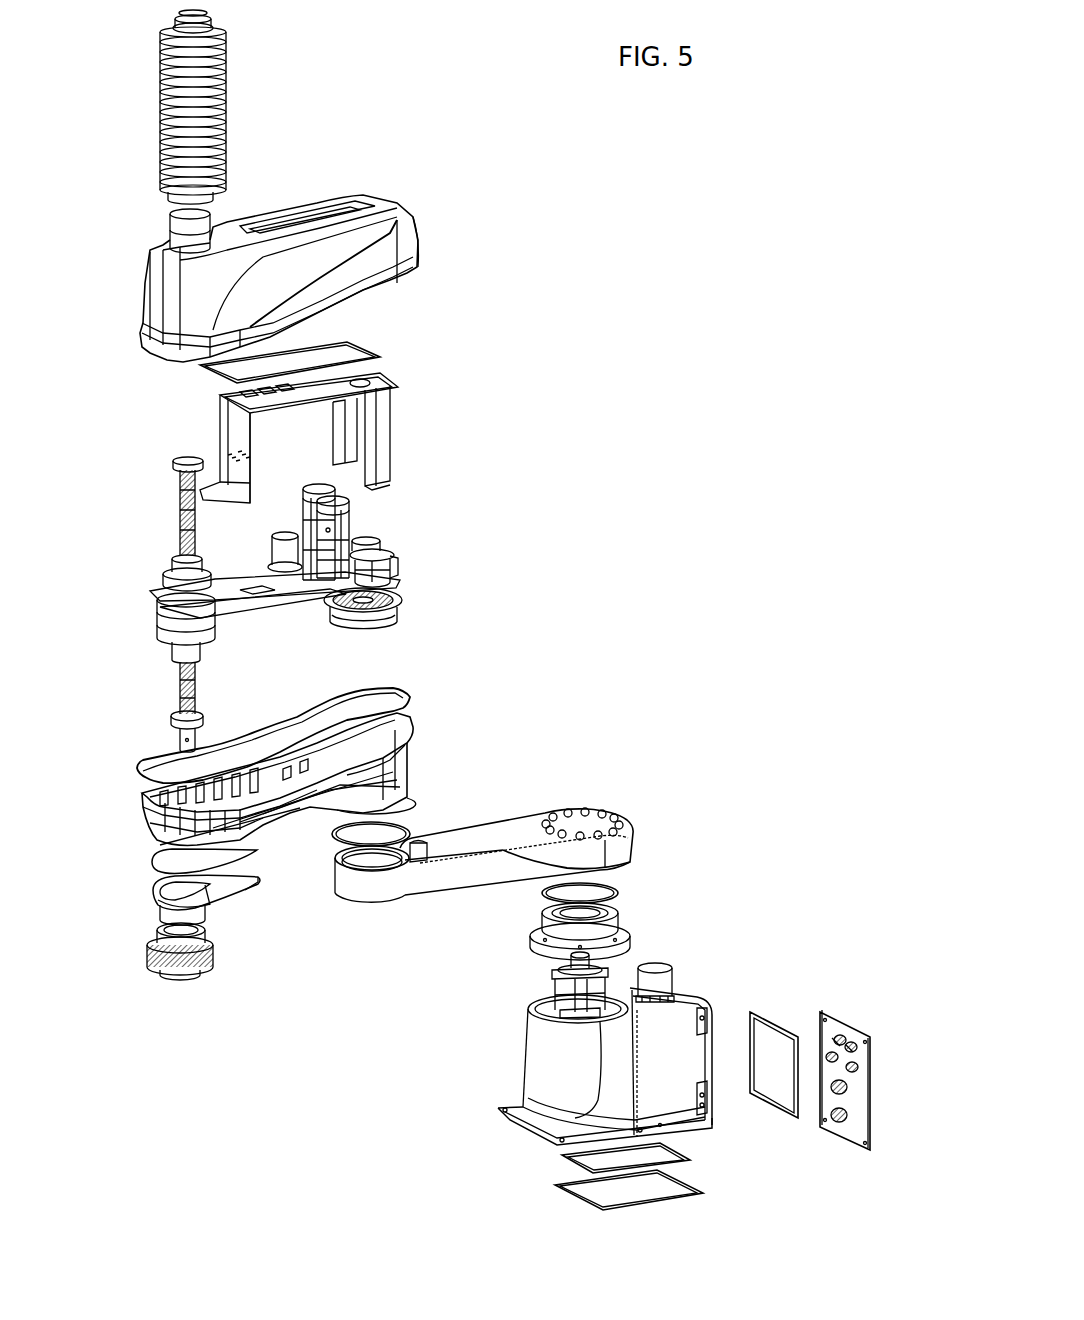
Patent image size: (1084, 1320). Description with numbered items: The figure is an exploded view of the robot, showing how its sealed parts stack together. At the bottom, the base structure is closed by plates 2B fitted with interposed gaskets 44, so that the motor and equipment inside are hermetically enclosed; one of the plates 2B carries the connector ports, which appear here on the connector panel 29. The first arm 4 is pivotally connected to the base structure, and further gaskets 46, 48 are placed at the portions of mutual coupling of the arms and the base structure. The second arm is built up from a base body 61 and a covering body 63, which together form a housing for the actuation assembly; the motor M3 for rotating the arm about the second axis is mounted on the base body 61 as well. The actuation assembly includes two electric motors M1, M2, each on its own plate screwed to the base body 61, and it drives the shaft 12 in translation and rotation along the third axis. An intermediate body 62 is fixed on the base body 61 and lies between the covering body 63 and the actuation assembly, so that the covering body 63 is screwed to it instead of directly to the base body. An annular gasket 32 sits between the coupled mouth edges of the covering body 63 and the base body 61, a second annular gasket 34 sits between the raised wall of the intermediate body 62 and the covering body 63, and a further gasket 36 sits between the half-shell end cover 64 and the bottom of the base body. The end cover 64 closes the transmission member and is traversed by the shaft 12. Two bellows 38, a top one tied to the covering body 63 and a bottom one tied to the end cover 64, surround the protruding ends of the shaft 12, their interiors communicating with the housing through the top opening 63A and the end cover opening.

The bellows 38 is at (228, 72).
The top opening 63A is at (172, 214).
The covering body 63 is at (425, 249).
The second annular gasket 34 is at (366, 352).
The intermediate body 62 is at (402, 420).
The shaft 12 is at (177, 515).
The electric motor M2 is at (316, 484).
The electric motor M1 is at (349, 508).
The motor M3 is at (390, 549).
The annular gasket 32 is at (396, 691).
The base body 61 is at (408, 760).
The gasket 46 is at (401, 826).
The gasket 36 is at (156, 861).
The half-shell end cover 64 is at (153, 891).
The first arm 4 is at (353, 891).
The gasket 48 is at (620, 893).
The gaskets 44 is at (780, 1025).
The connector panel 29 is at (874, 1068).
The plates 2B is at (668, 1192).